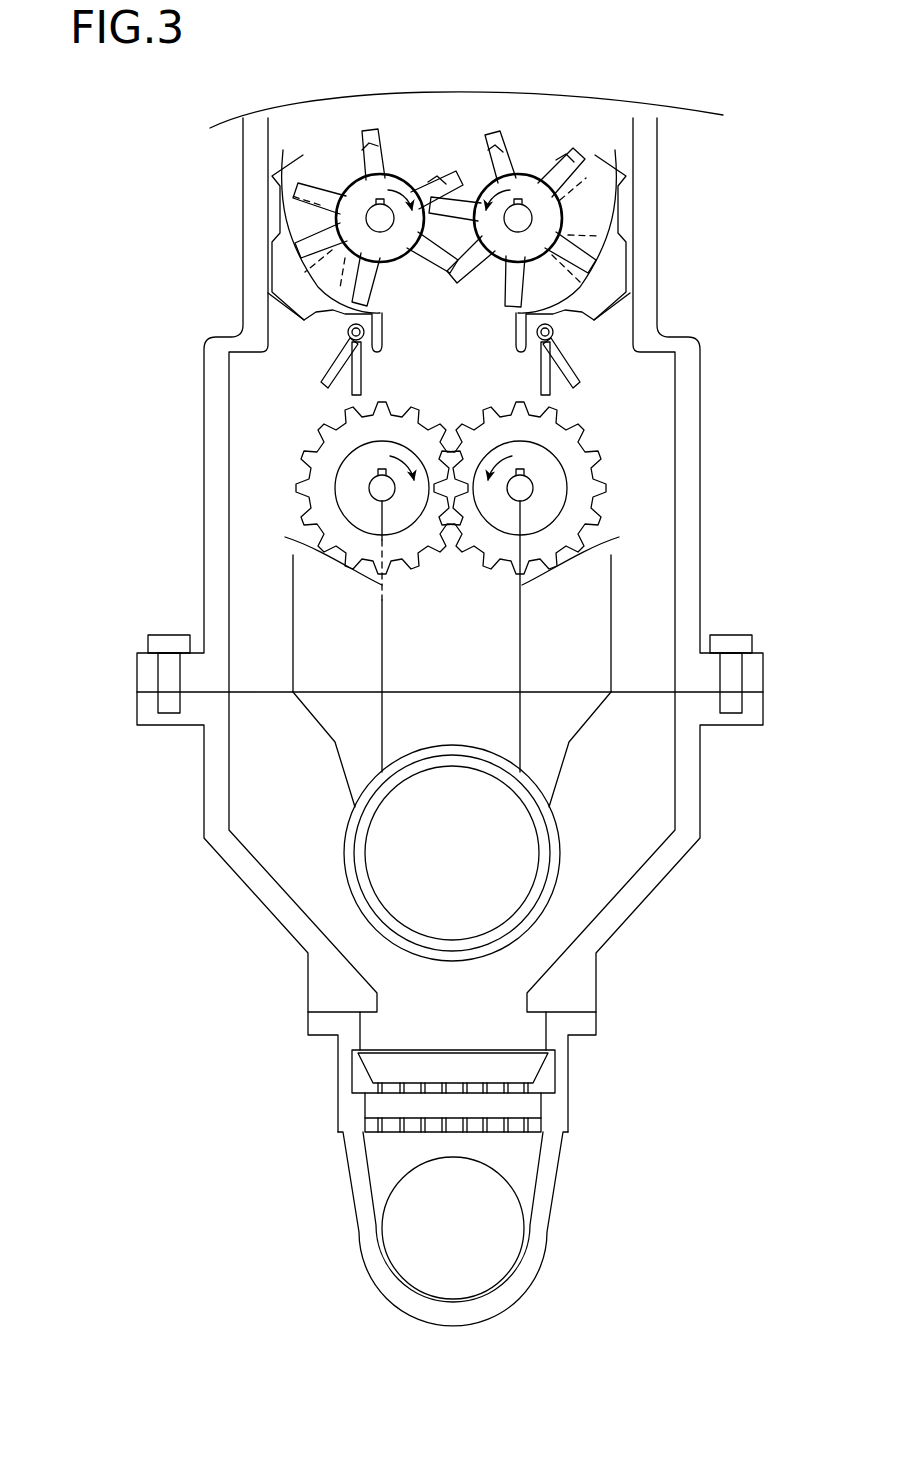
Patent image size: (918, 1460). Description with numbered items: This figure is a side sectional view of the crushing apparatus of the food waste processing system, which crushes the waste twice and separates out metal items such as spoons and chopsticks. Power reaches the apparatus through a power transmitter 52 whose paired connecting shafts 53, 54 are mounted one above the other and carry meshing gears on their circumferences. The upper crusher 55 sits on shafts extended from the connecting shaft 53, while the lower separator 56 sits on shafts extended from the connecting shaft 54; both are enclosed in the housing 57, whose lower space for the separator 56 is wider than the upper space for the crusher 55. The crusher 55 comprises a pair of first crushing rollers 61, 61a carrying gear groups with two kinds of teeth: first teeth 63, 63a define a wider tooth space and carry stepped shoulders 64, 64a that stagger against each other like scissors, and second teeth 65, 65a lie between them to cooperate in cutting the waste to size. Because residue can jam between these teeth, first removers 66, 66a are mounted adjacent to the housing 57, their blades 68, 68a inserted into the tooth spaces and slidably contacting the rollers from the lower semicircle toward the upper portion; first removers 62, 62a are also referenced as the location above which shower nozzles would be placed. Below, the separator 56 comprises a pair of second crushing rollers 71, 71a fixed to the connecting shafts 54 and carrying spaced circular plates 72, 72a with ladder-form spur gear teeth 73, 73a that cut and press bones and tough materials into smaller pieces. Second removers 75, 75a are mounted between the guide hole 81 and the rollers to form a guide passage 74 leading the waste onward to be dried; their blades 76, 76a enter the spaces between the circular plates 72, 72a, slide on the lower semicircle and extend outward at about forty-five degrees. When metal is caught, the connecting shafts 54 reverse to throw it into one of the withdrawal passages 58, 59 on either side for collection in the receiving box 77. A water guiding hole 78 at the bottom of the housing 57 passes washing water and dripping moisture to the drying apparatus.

The power transmitter 52 is at (382, 485).
The connecting shaft 53 is at (505, 222).
The connecting shaft 54 is at (512, 492).
The crusher 55 is at (458, 135).
The separator 56 is at (445, 400).
The housing 57 is at (215, 353).
The withdrawal passage 58 is at (243, 662).
The withdrawal passage 59 is at (657, 618).
The first crushing roller 61 is at (350, 225).
The first crushing roller 61a is at (538, 218).
The first remover 62 is at (337, 338).
The first remover 62a is at (562, 336).
The first teeth 63 is at (348, 138).
The first teeth 63a is at (485, 132).
The shoulder 64 is at (383, 160).
The shoulder 64a is at (537, 160).
The second teeth 65 is at (397, 160).
The second teeth 65a is at (540, 157).
The first remover 66 is at (300, 278).
The first remover 66a is at (620, 184).
The blade 68 is at (313, 263).
The blade 68a is at (603, 245).
The second crushing roller 71 is at (335, 465).
The second crushing roller 71a is at (535, 490).
The circular plate 72 is at (332, 440).
The circular plate 72a is at (560, 440).
The first teeth 73 is at (300, 486).
The second teeth 73a is at (600, 466).
The guide passage 74 is at (452, 636).
The second remover 75 is at (308, 676).
The second remover 75a is at (575, 697).
The blade 76 is at (343, 572).
The blade 76a is at (600, 560).
The receiving box 77 is at (365, 1072).
The water guiding hole 78 is at (393, 1235).
The guide hole 81 is at (452, 853).